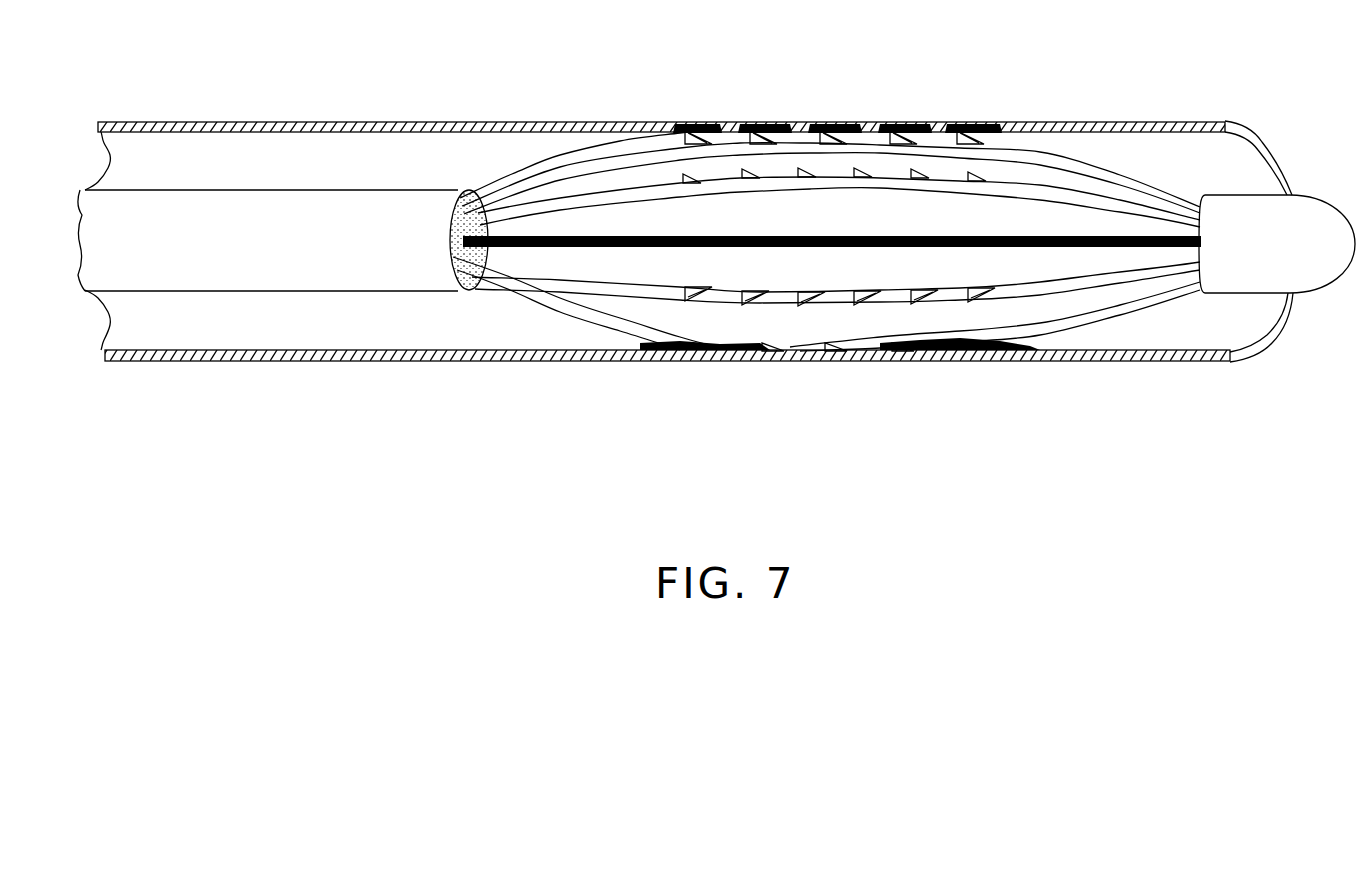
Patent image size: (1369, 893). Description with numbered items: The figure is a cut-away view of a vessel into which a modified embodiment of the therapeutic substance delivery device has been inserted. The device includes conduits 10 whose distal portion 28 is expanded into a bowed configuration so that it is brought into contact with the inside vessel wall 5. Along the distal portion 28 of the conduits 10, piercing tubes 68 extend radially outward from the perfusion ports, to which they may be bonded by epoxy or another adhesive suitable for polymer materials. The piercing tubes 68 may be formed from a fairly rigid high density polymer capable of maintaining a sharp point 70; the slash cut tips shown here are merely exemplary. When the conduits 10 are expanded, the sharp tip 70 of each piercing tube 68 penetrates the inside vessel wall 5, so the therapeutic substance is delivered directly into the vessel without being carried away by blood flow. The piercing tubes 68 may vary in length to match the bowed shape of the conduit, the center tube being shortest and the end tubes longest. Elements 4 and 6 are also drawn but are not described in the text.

The struts 4 is at (560, 156).
The inside vessel wall 5 is at (1091, 135).
The vessel 6 is at (1197, 122).
The conduit 10 is at (558, 315).
The distal portion of conduit 28 is at (1078, 320).
The piercing tube 68 is at (977, 137).
The sharp point 70 is at (752, 172).